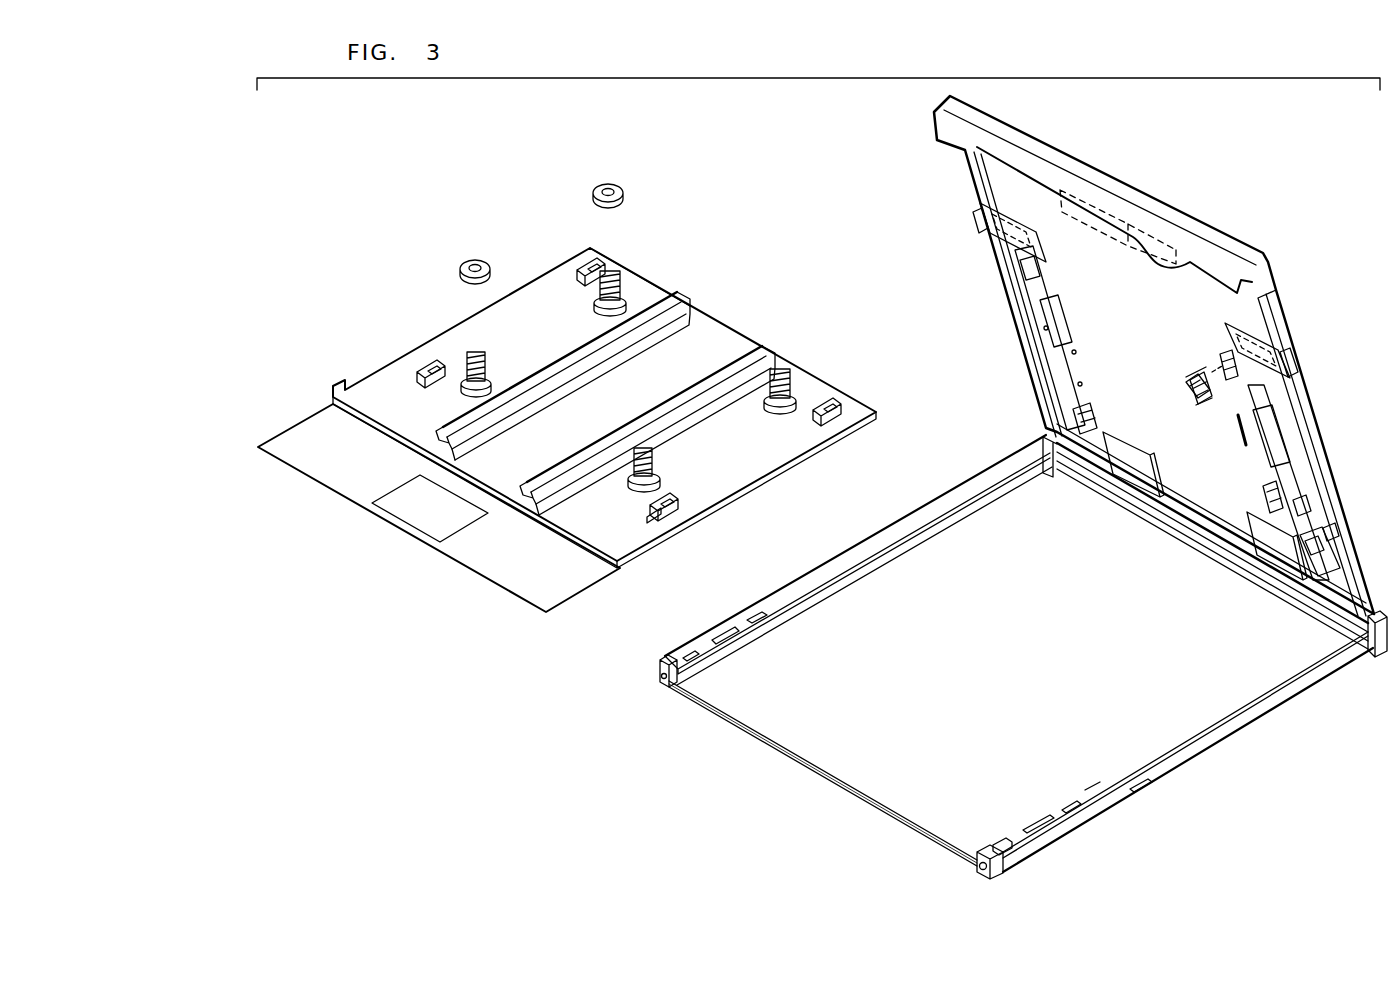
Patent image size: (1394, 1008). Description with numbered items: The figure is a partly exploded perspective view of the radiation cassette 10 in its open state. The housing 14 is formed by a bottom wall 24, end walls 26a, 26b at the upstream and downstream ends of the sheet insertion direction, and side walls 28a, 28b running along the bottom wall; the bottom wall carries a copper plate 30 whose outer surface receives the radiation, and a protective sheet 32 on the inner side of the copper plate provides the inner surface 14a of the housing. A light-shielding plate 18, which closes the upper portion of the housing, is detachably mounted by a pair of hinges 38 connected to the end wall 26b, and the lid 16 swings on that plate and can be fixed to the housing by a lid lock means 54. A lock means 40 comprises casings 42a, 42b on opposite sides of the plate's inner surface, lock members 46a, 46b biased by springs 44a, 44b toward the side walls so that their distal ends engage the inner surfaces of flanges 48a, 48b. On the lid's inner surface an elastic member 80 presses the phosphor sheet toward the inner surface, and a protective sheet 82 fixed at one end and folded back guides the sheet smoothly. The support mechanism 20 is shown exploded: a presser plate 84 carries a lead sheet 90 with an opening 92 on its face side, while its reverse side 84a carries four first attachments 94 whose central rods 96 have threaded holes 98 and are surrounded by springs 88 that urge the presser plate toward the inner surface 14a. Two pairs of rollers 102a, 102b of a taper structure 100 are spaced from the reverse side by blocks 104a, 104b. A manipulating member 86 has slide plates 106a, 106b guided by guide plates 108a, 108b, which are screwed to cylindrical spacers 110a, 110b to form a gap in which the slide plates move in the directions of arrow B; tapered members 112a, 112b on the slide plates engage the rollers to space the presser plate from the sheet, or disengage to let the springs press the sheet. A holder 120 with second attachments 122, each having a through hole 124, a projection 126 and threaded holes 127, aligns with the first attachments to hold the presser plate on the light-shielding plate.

The radiation cassette 10 is at (308, 192).
The housing 14 is at (1023, 669).
The inner surface of the housing 14a is at (1094, 788).
The lid 16 is at (1160, 372).
The light-shielding plate 18 is at (1306, 430).
The support mechanism 20 is at (604, 402).
The bottom wall 24 is at (832, 755).
The end wall 26a is at (998, 868).
The end wall 26b is at (1346, 616).
The side wall 28a is at (1188, 752).
The side wall 28b is at (856, 561).
The copper plate 30 is at (906, 834).
The protective sheet 32 is at (768, 750).
The hinges 38 is at (1114, 470).
The lock means 40 is at (1255, 331).
The casing 42a is at (1276, 346).
The casing 42b is at (1008, 215).
The spring 44a is at (1228, 342).
The spring 44b is at (976, 214).
The lock member 46a is at (1294, 372).
The lock member 46b is at (980, 226).
The flange 48a is at (1160, 772).
The flange 48b is at (788, 600).
The lid lock means 54 is at (1000, 824).
The elastic member 80 is at (1144, 214).
The protective sheet 82 is at (1048, 174).
The presser plate 84 is at (712, 490).
The reverse side of the presser plate 84a is at (706, 330).
The manipulating member 86 is at (1312, 456).
The springs 88 is at (618, 456).
The lead sheet 90 is at (482, 558).
The opening 92 is at (385, 503).
The first attachments 94 is at (768, 420).
The rods 96 is at (658, 468).
The threaded holes 98 is at (633, 390).
The taper structure 100 is at (666, 526).
The rollers 102a is at (678, 502).
The rollers 102b is at (433, 364).
The blocks 104a is at (656, 512).
The blocks 104b is at (424, 372).
The slide plate 106a is at (1294, 482).
The slide plate 106b is at (1058, 338).
The guide plates 108a is at (1270, 460).
The guide plates 108b is at (1076, 334).
The cylindrical spacers 110a is at (1330, 534).
The cylindrical spacers 110b is at (1082, 354).
The tapered members 112a is at (1306, 402).
The tapered members 112b is at (1022, 270).
The holder 120 is at (835, 248).
The second attachments 122 is at (624, 186).
The through holes 124 is at (1192, 400).
The projections 126 is at (1200, 378).
The threaded holes 127 is at (1190, 386).
The arrow B is at (1231, 430).